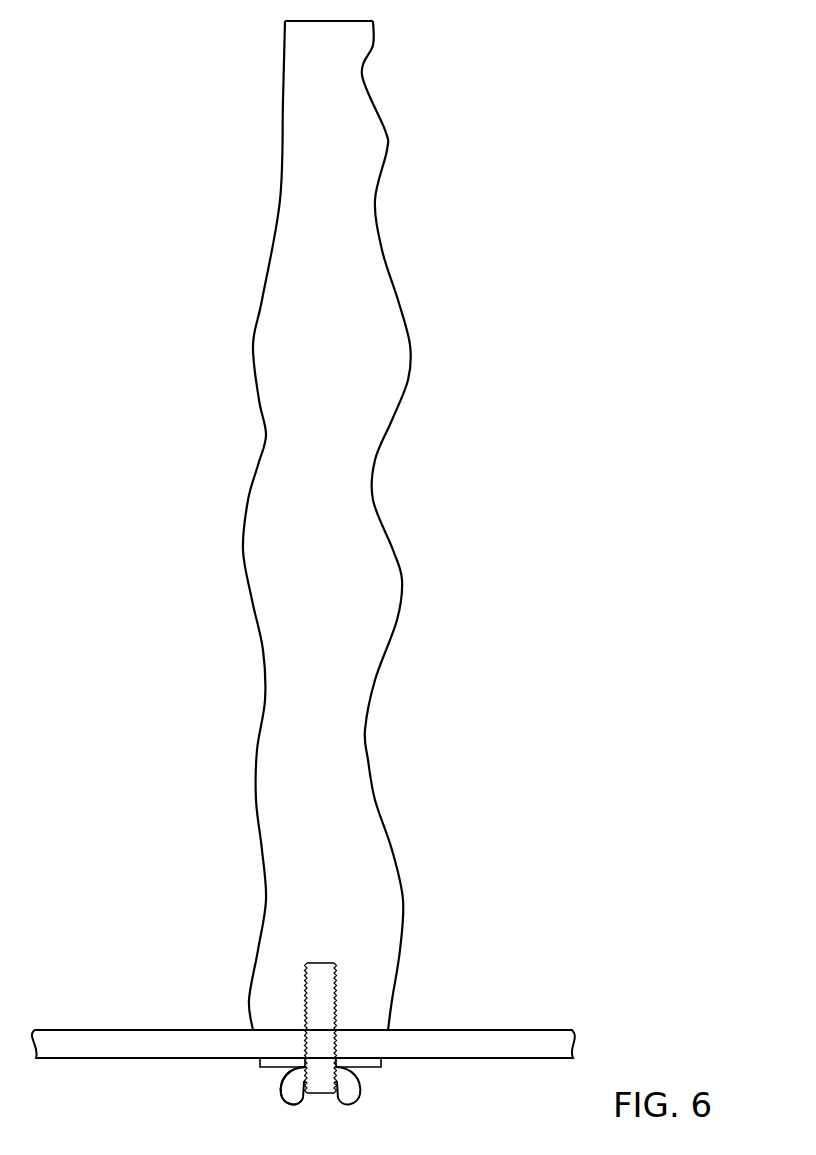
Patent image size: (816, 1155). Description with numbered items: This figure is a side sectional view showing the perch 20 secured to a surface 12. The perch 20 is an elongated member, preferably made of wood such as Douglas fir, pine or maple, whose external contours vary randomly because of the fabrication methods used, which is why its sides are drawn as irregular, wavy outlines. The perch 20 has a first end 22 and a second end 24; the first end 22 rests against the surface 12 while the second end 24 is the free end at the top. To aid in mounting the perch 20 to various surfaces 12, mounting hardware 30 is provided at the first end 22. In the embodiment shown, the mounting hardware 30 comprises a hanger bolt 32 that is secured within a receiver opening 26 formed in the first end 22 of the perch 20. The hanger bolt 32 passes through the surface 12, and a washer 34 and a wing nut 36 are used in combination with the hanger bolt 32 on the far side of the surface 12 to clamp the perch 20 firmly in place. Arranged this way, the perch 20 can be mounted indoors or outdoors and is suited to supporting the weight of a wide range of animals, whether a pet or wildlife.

The surface 12 is at (135, 1029).
The perch 20 is at (402, 580).
The first end 22 is at (378, 1042).
The second end 24 is at (342, 21).
The receiver opening 26 is at (322, 963).
The mounting hardware 30 is at (329, 1100).
The hanger bolt 32 is at (320, 1084).
The washer 34 is at (263, 1065).
The wing nut 36 is at (282, 1090).